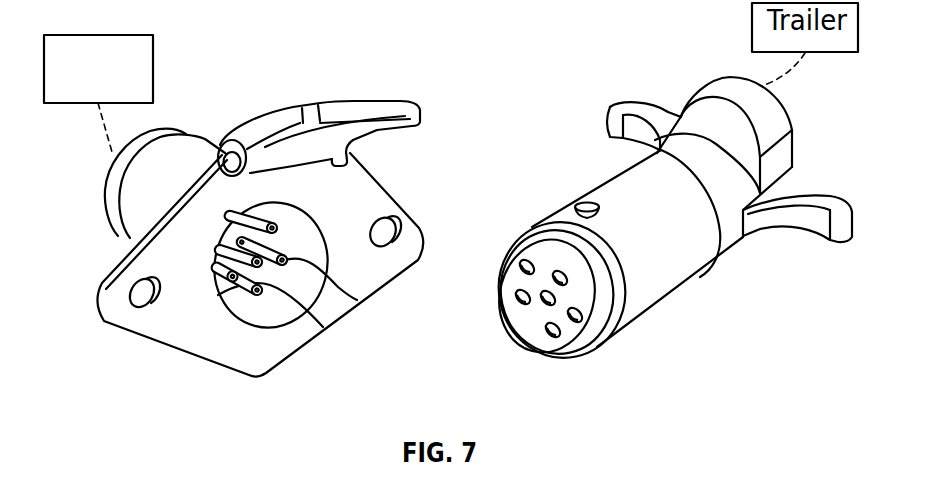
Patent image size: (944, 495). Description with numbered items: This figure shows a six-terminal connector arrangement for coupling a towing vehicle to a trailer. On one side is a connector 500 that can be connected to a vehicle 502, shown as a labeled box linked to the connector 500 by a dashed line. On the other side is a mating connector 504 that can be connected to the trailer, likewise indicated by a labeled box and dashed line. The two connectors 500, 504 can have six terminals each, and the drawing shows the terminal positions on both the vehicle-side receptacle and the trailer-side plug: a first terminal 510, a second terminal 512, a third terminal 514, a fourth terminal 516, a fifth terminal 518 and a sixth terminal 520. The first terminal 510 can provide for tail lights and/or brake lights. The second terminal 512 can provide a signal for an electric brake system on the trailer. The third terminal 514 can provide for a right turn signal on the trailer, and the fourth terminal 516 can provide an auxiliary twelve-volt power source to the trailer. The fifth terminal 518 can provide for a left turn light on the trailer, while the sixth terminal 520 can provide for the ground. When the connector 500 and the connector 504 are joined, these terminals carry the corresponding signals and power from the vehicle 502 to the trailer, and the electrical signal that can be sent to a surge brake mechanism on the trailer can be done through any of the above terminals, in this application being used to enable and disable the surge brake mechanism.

The connector 500 is at (146, 369).
The vehicle 502 is at (110, 35).
The connector 504 is at (681, 320).
The first terminal 510 is at (236, 224).
The second terminal 512 is at (280, 218).
The third terminal 514 is at (357, 302).
The fourth terminal 516 is at (240, 226).
The fifth terminal 518 is at (323, 327).
The sixth terminal 520 is at (222, 265).